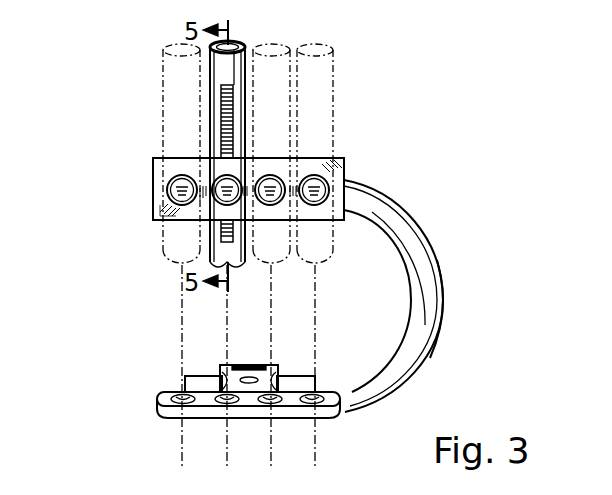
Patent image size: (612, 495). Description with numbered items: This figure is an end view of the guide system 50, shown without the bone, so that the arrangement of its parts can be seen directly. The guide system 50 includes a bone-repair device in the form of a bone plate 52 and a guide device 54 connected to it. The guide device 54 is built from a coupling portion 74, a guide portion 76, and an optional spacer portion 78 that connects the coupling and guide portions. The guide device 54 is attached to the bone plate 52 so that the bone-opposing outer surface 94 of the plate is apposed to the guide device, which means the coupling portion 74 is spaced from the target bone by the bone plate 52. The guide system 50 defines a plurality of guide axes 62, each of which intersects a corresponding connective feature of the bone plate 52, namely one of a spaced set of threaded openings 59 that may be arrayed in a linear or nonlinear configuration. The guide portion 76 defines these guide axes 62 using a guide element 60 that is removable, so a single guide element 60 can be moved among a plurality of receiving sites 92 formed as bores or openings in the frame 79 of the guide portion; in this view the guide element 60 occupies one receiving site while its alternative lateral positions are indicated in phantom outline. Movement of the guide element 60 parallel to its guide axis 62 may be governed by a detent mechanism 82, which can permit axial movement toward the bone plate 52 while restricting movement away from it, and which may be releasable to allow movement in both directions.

The guide system 50 is at (88, 236).
The bone plate 52 is at (215, 382).
The guide device 54 is at (461, 234).
The threaded openings 59 is at (192, 403).
The guide element 60 is at (183, 44).
The guide axes 62 is at (230, 330).
The coupling portion 74 is at (178, 380).
The guide portion 76 is at (368, 164).
The spacer portion 78 is at (458, 291).
The frame 79 is at (156, 208).
The detent mechanism 82 is at (128, 177).
The receiving sites 92 is at (312, 152).
The outer surface 94 is at (336, 426).